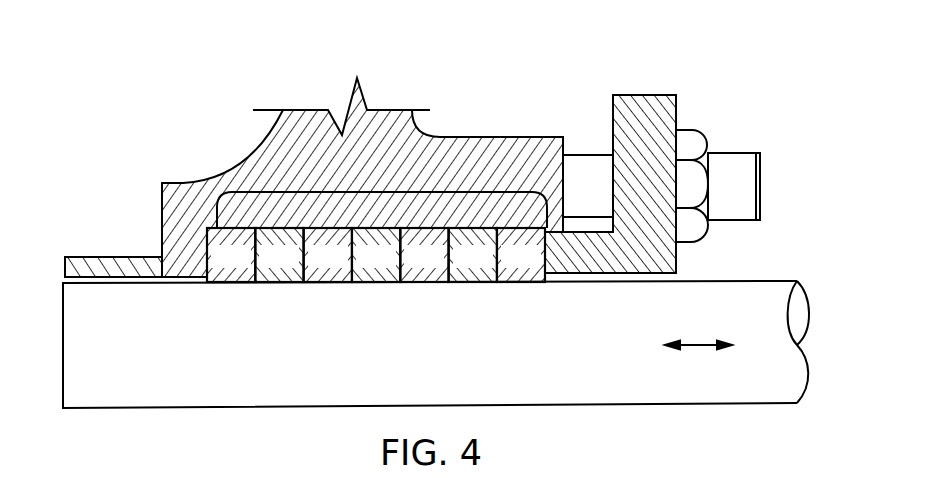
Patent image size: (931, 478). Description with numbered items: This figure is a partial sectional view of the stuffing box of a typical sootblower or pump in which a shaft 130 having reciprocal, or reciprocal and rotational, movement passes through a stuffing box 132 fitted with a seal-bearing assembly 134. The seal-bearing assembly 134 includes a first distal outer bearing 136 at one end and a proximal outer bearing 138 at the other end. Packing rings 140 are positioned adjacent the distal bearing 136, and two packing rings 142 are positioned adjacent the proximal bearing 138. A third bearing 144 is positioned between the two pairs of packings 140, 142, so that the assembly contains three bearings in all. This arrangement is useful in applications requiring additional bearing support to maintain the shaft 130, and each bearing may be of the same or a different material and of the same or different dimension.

The shaft 130 is at (770, 297).
The stuffing box 132 is at (497, 149).
The seal-bearing assembly 134 is at (388, 192).
The first distal outer bearing 136 is at (213, 267).
The proximal outer bearing 138 is at (503, 267).
The packing rings 140 is at (261, 267).
The packing rings 142 is at (406, 267).
The third bearing 144 is at (358, 267).